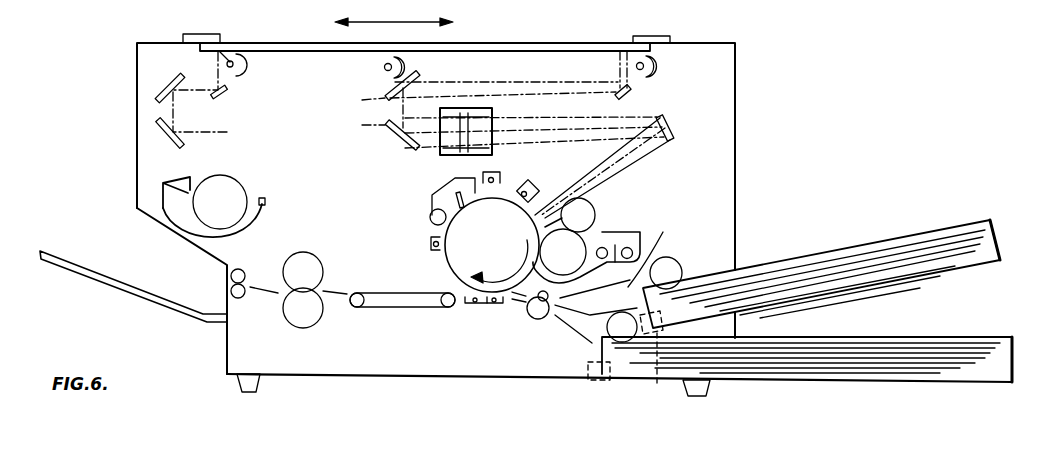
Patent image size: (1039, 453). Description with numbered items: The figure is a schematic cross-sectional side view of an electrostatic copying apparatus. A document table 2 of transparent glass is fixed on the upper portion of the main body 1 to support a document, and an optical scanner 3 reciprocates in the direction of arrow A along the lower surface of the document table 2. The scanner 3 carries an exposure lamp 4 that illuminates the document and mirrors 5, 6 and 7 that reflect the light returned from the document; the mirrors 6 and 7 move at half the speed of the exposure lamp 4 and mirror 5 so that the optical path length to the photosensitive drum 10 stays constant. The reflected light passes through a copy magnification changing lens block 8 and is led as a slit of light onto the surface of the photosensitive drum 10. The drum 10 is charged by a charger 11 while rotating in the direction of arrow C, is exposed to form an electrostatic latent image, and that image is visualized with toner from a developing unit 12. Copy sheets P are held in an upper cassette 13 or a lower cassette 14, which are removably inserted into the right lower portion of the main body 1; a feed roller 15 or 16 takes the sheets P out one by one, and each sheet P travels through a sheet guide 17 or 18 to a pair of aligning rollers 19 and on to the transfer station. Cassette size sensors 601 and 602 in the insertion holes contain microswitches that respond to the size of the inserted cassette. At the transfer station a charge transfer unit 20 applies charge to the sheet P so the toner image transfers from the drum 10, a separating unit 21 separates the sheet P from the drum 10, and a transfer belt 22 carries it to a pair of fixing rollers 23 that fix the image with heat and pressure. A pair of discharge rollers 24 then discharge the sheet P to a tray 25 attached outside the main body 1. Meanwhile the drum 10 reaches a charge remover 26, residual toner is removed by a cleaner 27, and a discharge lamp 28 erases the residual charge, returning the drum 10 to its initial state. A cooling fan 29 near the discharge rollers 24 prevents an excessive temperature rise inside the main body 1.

The main body 1 is at (738, 75).
The document table 2 is at (283, 51).
The optical scanner 3 is at (296, 119).
The exposure lamp 4 is at (384, 68).
The mirror 5 is at (632, 95).
The mirror 6 is at (382, 90).
The mirror 7 is at (382, 132).
The copy magnification changing lens block 8 is at (442, 150).
The photosensitive drum 10 is at (447, 268).
The charger 11 is at (538, 184).
The developing unit 12 is at (612, 230).
The upper cassette 13 is at (975, 270).
The lower cassette 14 is at (957, 380).
The feed roller 15 is at (682, 262).
The feed roller 16 is at (625, 340).
The sheet guide 17 is at (650, 249).
The sheet guide 18 is at (578, 322).
The pair of aligning rollers 19 is at (535, 320).
The charge transfer unit 20 is at (498, 306).
The separating unit 21 is at (472, 306).
The transfer belt 22 is at (397, 308).
The pair of fixing rollers 23 is at (303, 328).
The pair of discharge rollers 24 is at (242, 299).
The tray 25 is at (127, 295).
The charge remover 26 is at (428, 245).
The cleaner 27 is at (430, 205).
The discharge lamp 28 is at (503, 178).
The cooling fan 29 is at (244, 190).
The cassette size sensor 601 is at (661, 367).
The cassette size sensor 602 is at (605, 382).
The arrow A is at (394, 13).
The arrow C is at (493, 261).
The copy sheet P is at (915, 233).